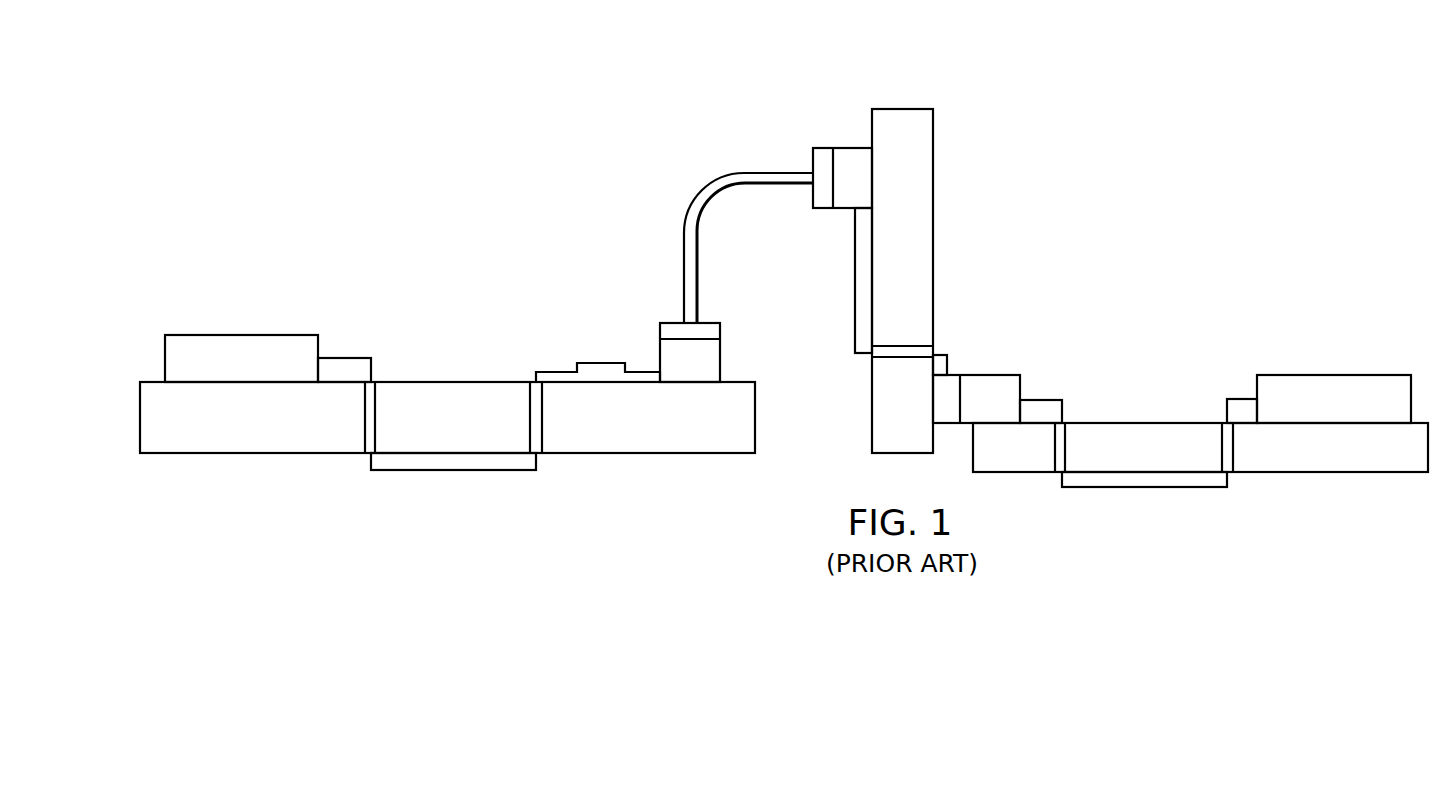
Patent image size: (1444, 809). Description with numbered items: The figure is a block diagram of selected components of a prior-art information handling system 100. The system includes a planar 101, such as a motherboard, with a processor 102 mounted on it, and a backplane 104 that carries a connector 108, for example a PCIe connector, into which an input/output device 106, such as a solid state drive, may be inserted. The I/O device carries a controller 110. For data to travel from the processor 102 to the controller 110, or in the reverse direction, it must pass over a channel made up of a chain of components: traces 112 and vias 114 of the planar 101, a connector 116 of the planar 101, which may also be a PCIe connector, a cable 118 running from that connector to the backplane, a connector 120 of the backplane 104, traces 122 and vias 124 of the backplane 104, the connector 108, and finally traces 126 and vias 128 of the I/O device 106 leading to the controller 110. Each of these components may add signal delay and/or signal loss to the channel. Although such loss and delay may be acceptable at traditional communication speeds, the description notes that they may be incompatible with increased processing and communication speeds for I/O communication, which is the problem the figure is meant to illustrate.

The information handling system 100 is at (1218, 82).
The planar 101 is at (228, 455).
The processor 102 is at (240, 335).
The backplane 104 is at (933, 246).
The input/output (I/O) device 106 is at (1355, 472).
The connector 108 is at (991, 375).
The controller 110 is at (1333, 375).
The traces 112 is at (352, 358).
The vias 114 is at (365, 415).
The connector 116 is at (720, 366).
The cable 118 is at (684, 238).
The connector 120 is at (845, 148).
The traces 122 is at (855, 280).
The vias 124 is at (893, 358).
The traces 126 is at (1041, 400).
The vias 128 is at (1055, 458).